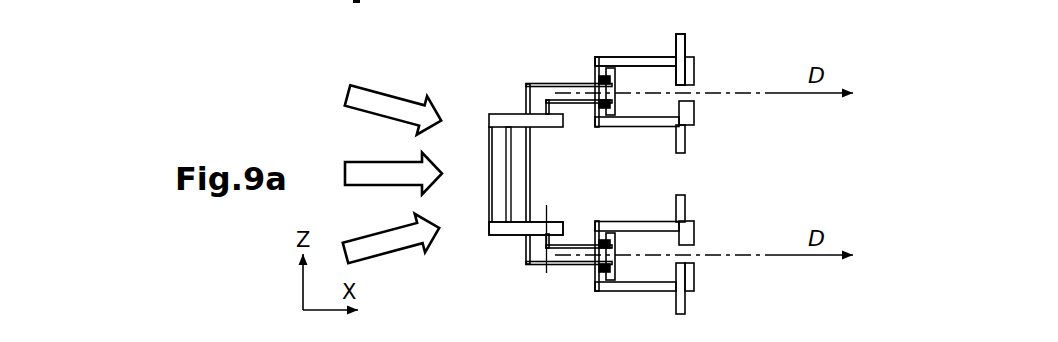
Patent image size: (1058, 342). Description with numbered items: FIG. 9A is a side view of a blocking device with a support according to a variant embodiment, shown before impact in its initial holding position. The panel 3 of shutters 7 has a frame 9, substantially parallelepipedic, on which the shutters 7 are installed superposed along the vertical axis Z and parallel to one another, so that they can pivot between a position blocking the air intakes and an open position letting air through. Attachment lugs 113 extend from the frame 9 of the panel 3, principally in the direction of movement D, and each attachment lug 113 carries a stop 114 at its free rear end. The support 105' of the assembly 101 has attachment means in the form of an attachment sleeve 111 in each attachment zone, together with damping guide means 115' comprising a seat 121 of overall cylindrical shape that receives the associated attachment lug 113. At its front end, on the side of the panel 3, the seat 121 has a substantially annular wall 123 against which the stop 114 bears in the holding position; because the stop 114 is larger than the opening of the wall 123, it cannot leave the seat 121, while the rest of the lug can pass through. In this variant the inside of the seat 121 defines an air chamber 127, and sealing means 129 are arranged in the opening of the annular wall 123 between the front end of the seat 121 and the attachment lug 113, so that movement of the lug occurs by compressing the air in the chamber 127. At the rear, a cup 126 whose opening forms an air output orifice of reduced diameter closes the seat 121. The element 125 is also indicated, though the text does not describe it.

The panel of shutters 3 is at (494, 243).
The shutters 7 is at (506, 153).
The frame 9 is at (498, 113).
The actuator assembly 101 is at (708, 21).
The support 105' is at (733, 59).
The attachment sleeve 111 is at (622, 127).
The attachment lug 113 is at (538, 81).
The stop 114 is at (587, 268).
The damping guide means 115' is at (630, 63).
The seat 121 is at (641, 289).
The annular wall 123 is at (253, 12).
The element 125 is at (312, 12).
The cup 126 is at (697, 112).
The air chamber 127 is at (646, 78).
The sealing means 129 is at (598, 77).